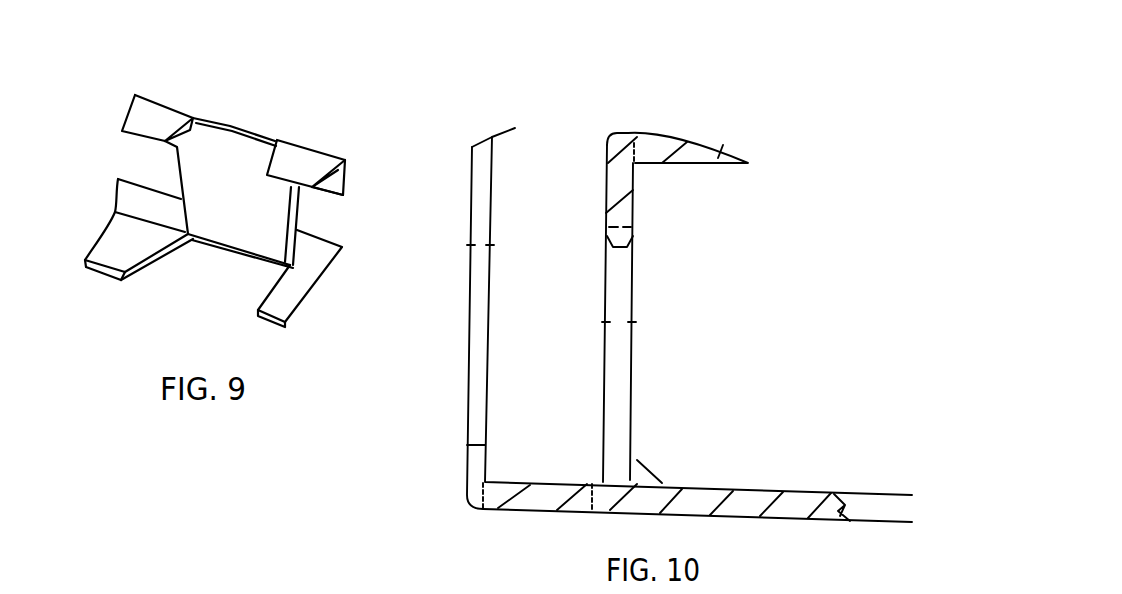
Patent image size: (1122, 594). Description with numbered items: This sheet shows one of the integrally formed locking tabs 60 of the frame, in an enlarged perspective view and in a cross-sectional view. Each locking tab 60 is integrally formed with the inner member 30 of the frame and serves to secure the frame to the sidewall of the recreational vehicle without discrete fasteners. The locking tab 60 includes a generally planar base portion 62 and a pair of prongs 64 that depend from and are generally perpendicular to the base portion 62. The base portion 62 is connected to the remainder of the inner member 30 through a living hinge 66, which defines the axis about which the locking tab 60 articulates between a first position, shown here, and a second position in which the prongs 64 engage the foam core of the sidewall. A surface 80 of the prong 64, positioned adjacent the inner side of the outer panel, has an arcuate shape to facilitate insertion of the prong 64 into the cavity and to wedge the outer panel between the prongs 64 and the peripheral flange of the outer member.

In FIG. 10, the inner member 30 is at (488, 112).
In FIG. 9, the locking tab 60 is at (117, 72).
In FIG. 10, the locking tab 60 is at (597, 192).
In FIG. 9, the base portion 62 is at (270, 213).
In FIG. 9, the prongs 64 is at (140, 120).
In FIG. 9, the living hinge 66 is at (293, 262).
In FIG. 10, the surface 80 is at (675, 137).